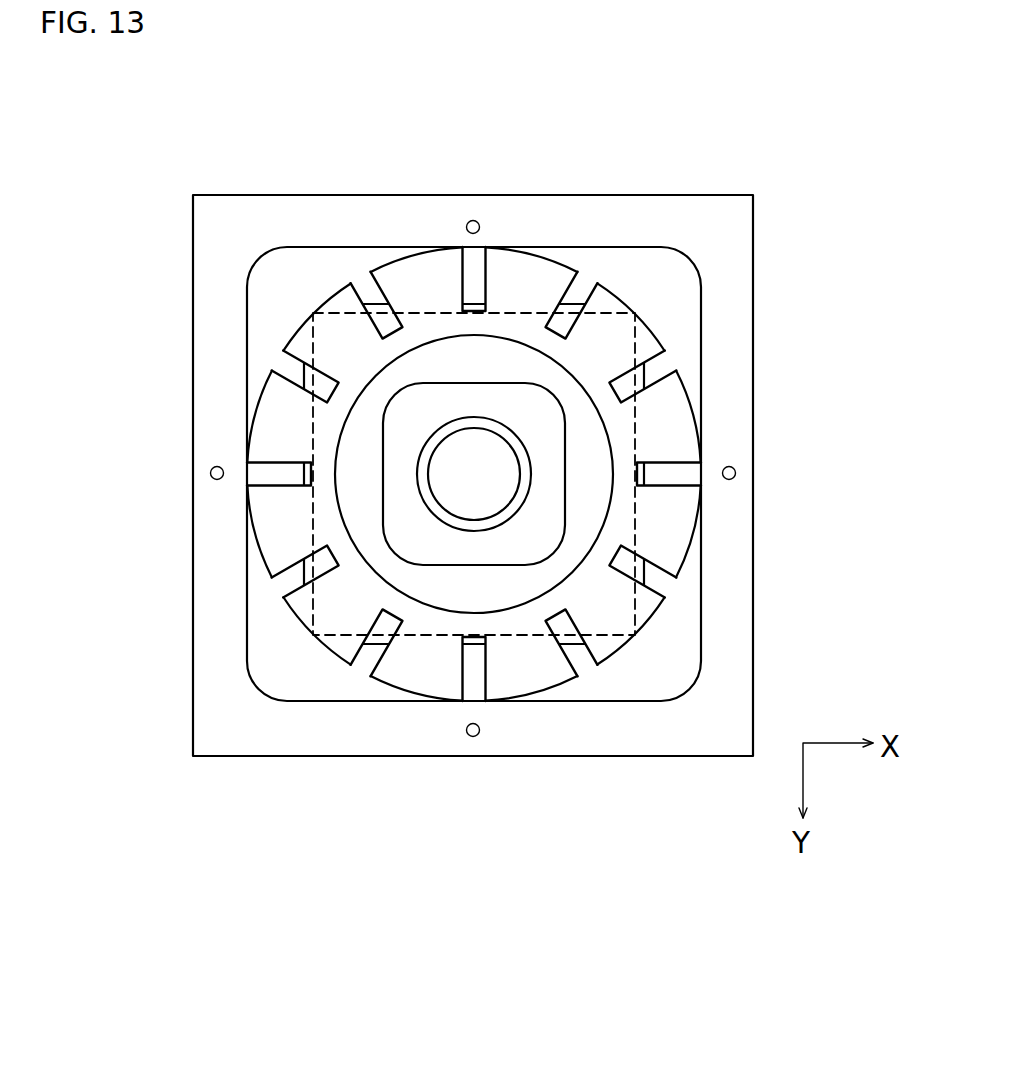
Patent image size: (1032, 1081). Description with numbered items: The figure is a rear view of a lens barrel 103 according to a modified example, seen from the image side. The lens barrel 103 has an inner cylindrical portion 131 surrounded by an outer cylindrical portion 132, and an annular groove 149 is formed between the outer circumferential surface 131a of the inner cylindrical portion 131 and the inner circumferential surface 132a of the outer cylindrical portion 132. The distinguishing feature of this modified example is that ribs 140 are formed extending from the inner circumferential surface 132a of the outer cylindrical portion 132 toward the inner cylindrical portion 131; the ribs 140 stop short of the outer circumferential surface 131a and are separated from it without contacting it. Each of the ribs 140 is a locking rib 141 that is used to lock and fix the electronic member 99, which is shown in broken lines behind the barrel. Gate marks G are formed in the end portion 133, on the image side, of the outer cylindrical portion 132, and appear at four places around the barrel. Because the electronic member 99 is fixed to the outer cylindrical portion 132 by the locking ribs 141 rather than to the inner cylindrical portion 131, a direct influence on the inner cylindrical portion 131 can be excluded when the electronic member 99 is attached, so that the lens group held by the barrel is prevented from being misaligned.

The lens barrel 103 is at (135, 94).
The end portion 133 is at (754, 233).
The annular groove 149 is at (259, 689).
The electronic member 99 is at (518, 636).
The inner cylindrical portion 131 is at (603, 420).
The outer circumferential surface 131a is at (336, 503).
The ribs 140 is at (481, 475).
The locking rib 141 is at (460, 290).
The outer cylindrical portion 132 is at (660, 327).
The inner circumferential surface 132a is at (279, 558).
The gate marks G is at (472, 220).